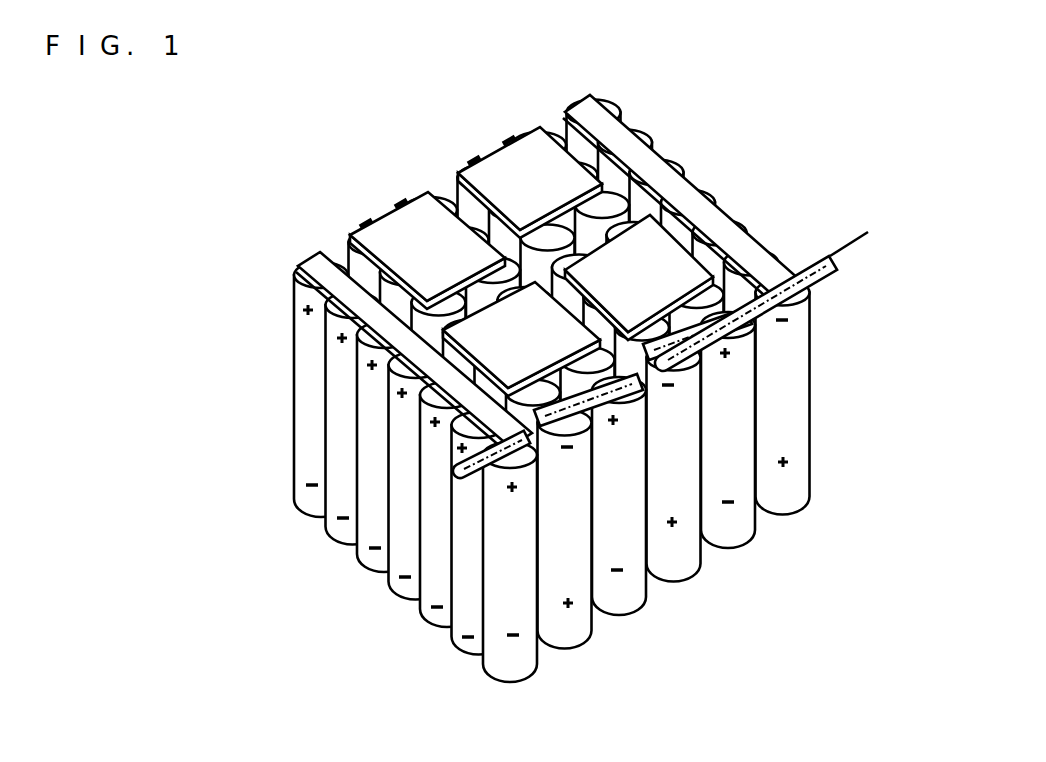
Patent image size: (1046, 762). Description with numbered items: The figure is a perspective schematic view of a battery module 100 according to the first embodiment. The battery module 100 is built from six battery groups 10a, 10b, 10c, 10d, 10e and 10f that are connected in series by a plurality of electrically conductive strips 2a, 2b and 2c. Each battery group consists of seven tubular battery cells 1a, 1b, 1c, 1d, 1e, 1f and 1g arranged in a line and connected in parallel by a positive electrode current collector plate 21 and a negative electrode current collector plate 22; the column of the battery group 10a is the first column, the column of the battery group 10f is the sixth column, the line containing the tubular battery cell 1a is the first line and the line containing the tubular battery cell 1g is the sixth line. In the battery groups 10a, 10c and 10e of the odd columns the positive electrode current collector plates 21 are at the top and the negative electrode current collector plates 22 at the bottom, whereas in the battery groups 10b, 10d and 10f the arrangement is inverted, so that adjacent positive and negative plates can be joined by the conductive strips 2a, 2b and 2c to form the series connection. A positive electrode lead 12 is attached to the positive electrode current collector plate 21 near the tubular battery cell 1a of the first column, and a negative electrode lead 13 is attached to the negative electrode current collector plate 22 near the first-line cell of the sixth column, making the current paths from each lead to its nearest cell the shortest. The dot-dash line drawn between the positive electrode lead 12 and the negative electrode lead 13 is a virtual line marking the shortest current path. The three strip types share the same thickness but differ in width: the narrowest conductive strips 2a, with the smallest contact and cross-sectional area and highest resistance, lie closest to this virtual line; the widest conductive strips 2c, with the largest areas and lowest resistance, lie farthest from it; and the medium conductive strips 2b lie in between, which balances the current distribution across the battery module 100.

The battery module 100 is at (188, 168).
The tubular battery cell 1a is at (497, 672).
The tubular battery cell 1b is at (450, 637).
The tubular battery cell 1c is at (422, 605).
The tubular battery cell 1d is at (390, 570).
The tubular battery cell 1e is at (357, 543).
The tubular battery cell 1f is at (330, 513).
The tubular battery cell 1g is at (297, 486).
The battery group 10a is at (549, 499).
The battery group 10b is at (594, 650).
The battery group 10c is at (649, 617).
The battery group 10d is at (704, 584).
The battery group 10e is at (758, 550).
The battery group 10f is at (812, 516).
The conductive strip 2a is at (640, 400).
The conductive strip 2b is at (645, 265).
The conductive strip 2c is at (513, 183).
The positive electrode current collector plate 21 is at (650, 193).
The negative electrode current collector plate 22 is at (677, 195).
The positive electrode lead 12 is at (460, 473).
The negative electrode lead 13 is at (833, 268).